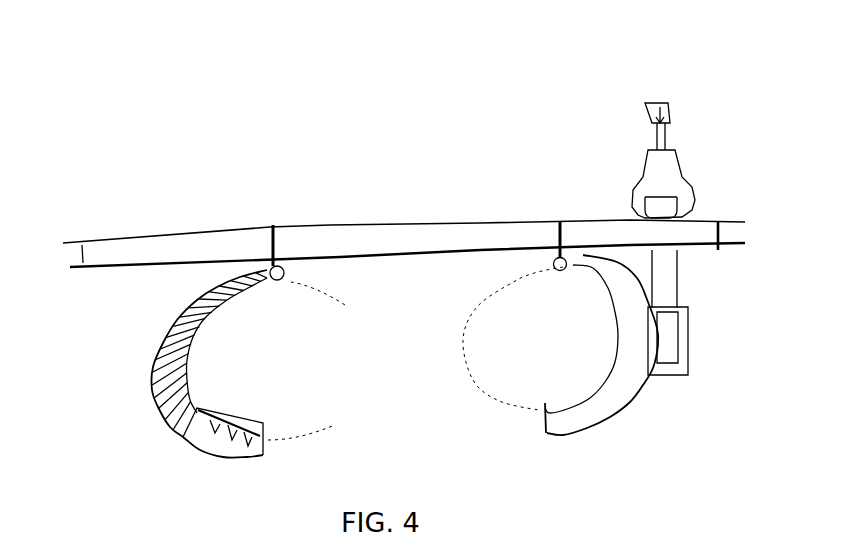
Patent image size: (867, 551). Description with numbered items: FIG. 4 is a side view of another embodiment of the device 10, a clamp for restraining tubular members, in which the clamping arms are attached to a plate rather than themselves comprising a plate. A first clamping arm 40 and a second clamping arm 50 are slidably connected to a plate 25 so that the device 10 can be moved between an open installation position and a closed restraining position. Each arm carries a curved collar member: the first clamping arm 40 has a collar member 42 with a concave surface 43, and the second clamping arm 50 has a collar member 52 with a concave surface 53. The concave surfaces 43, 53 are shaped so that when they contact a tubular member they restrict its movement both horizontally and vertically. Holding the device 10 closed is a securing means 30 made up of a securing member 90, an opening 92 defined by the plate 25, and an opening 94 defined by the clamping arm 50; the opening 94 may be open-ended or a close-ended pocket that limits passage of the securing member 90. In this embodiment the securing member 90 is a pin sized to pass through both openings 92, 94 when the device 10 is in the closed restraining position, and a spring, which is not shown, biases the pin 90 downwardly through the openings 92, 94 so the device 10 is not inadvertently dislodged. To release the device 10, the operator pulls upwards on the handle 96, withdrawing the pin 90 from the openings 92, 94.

The device 10 is at (726, 60).
The plate 25 is at (373, 225).
The securing means 30 is at (641, 290).
The first clamping arm 40 is at (196, 383).
The curved collar member 42 is at (211, 452).
The concave surface 43 is at (186, 356).
The second clamping arm 50 is at (572, 366).
The curved collar member 52 is at (575, 436).
The concave surface 53 is at (616, 340).
The securing member 90 is at (680, 275).
The opening 92 is at (678, 218).
The opening 94 is at (690, 339).
The handle 96 is at (672, 118).